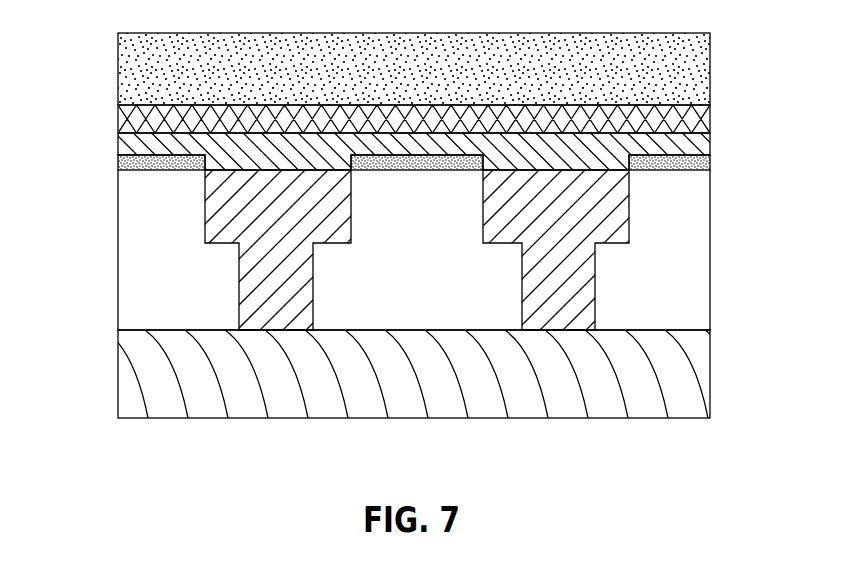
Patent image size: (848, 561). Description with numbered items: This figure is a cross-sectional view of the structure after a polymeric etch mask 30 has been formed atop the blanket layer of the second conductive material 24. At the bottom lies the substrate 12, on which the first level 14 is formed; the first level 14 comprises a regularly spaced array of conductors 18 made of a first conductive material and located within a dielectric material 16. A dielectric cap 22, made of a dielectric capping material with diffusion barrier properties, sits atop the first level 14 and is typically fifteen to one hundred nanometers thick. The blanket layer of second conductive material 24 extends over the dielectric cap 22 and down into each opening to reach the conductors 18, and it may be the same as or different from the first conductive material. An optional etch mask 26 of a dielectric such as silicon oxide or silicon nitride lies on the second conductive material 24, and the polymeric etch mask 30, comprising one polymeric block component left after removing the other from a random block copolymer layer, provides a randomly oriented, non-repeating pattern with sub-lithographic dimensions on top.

The substrate 12 is at (430, 388).
The first level 14 is at (113, 170).
The dielectric material 16 is at (431, 276).
The conductors 18 is at (292, 224).
The dielectric cap 22 is at (118, 162).
The blanket layer of second conductive material 24 is at (700, 144).
The etch mask 26 is at (710, 120).
The polymeric etch mask 30 is at (430, 84).